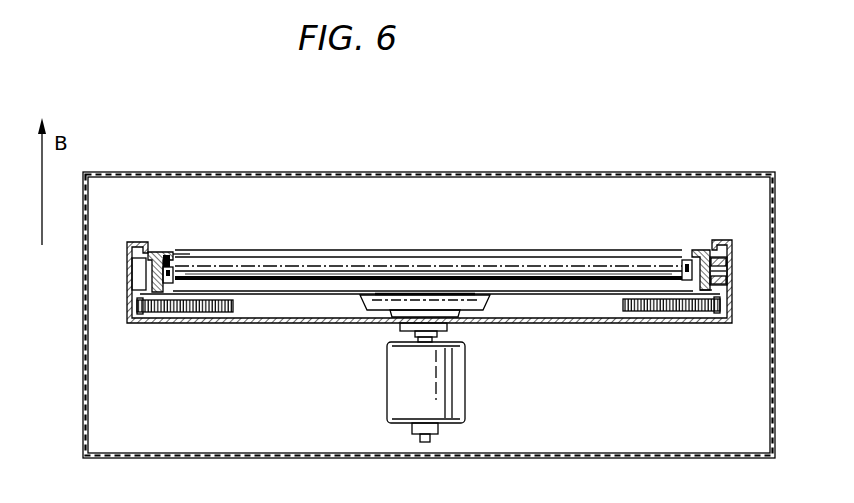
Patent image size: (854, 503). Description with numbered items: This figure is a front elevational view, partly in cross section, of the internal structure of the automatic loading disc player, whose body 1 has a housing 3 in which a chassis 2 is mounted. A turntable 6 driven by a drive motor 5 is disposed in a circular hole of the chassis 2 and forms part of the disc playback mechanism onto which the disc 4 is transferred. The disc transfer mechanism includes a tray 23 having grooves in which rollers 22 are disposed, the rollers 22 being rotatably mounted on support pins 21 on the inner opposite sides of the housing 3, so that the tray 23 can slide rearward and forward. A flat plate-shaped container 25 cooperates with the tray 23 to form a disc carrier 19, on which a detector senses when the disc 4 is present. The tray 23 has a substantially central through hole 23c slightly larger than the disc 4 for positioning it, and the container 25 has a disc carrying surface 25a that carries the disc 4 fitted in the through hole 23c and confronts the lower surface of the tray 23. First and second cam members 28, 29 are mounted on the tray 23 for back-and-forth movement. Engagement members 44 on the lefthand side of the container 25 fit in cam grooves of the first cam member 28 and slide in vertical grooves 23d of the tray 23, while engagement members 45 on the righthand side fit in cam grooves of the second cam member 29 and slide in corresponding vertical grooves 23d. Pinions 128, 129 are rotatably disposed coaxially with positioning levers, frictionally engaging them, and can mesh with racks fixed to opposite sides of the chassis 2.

The body 1 is at (429, 275).
The chassis 2 is at (560, 322).
The housing 3 is at (686, 170).
The disc 4 is at (354, 262).
The drive motor 5 is at (394, 405).
The turntable 6 is at (365, 303).
The disc carrier 19 is at (443, 232).
The support pins 21 is at (722, 270).
The rollers 22 is at (140, 280).
The tray 23 is at (156, 252).
The through hole 23c is at (183, 256).
The vertical grooves 23d is at (703, 252).
The container 25 is at (577, 277).
The disc carrying surface 25a is at (510, 274).
The first cam member 28 is at (168, 258).
The second cam member 29 is at (697, 252).
The engagement members 44 is at (175, 272).
The engagement members 45 is at (686, 266).
The pinion 128 is at (681, 308).
The pinion 129 is at (212, 308).